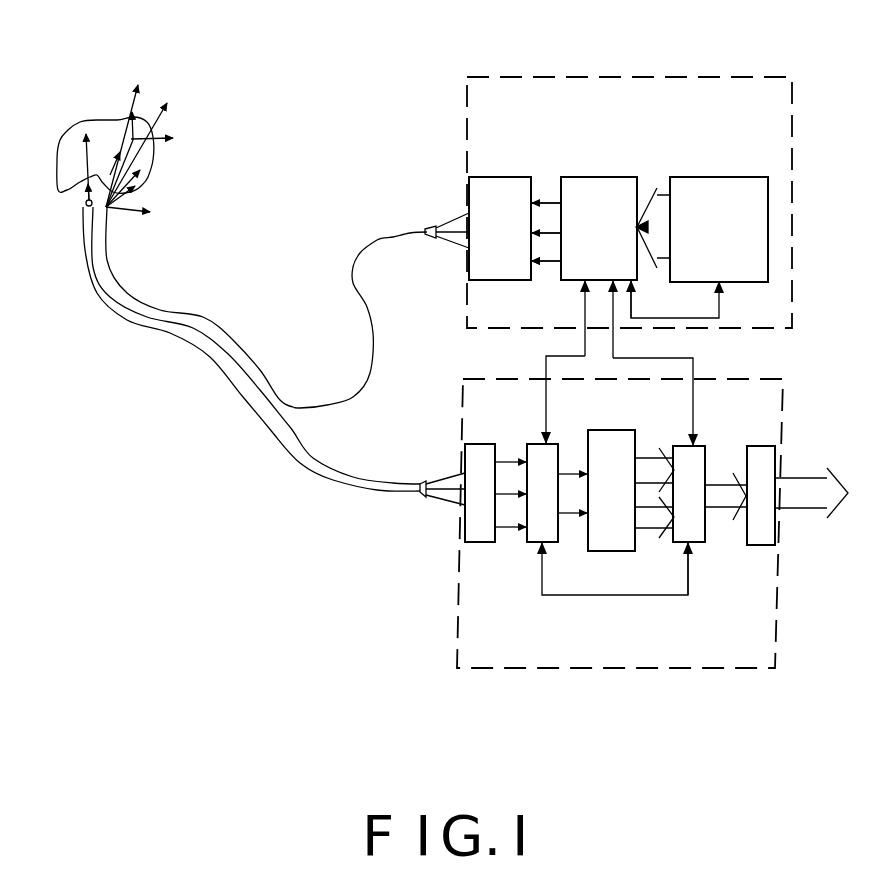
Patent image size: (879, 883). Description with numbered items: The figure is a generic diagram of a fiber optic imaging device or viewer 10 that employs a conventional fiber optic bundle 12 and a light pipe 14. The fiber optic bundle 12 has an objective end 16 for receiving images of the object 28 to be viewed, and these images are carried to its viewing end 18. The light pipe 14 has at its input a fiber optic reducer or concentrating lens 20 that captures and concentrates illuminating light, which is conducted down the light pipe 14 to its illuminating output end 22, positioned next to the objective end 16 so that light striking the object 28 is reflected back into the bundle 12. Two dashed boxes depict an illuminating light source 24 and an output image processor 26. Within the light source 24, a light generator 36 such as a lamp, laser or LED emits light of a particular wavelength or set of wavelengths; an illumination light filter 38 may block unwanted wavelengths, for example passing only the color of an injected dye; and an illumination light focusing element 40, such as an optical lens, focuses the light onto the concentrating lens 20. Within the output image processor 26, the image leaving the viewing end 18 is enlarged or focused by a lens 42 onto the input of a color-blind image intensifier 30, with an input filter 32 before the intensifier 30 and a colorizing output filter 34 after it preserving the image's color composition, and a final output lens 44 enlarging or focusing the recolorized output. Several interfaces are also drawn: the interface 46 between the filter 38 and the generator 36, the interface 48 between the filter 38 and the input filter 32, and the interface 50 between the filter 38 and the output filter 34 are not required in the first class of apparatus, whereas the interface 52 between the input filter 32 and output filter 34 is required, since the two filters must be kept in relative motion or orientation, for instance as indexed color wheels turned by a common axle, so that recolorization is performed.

The fiber optic imaging device 10 is at (352, 515).
The fiber optic bundle 12 is at (305, 468).
The light pipe 14 is at (217, 333).
The objective end 16 is at (87, 208).
The viewing end 18 is at (420, 494).
The concentrating lens 20 is at (425, 228).
The illuminating output end 22 is at (110, 208).
The illuminating light source 24 is at (612, 75).
The output image processor 26 is at (707, 670).
The object 28 is at (73, 147).
The image intensifier 30 is at (610, 440).
The input filter 32 is at (540, 525).
The output filter 34 is at (695, 462).
The light generator 36 is at (715, 193).
The illumination light filter 38 is at (591, 202).
The illumination light focusing element 40 is at (507, 198).
The lens 42 is at (470, 530).
The final output lens 44 is at (770, 460).
The filter to generator interface 46 is at (717, 307).
The filter to filter interface 48 is at (546, 362).
The filter to filter interface 50 is at (695, 366).
The filter to filter interface 52 is at (688, 567).